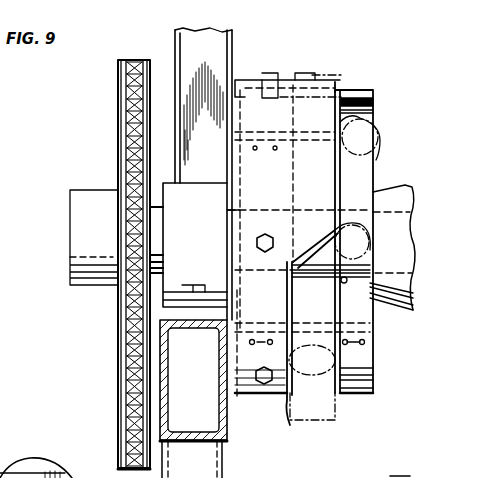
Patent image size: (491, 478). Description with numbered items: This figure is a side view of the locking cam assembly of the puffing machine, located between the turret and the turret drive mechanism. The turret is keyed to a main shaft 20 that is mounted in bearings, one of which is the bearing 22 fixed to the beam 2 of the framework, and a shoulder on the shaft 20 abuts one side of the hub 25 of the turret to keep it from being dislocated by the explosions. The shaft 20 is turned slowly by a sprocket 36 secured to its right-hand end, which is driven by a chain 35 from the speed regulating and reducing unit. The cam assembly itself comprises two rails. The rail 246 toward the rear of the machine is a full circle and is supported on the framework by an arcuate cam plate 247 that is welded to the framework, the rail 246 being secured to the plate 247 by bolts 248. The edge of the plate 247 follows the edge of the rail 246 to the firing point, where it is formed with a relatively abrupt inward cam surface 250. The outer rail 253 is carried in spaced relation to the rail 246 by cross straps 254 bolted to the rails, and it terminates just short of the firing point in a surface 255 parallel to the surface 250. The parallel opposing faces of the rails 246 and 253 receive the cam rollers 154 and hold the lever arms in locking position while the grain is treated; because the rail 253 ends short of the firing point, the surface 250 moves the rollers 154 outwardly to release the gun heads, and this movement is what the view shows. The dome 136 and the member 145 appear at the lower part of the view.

The beam 2 is at (227, 445).
The main shaft 20 is at (157, 222).
The bearing 22 is at (214, 190).
The hub 25 is at (405, 185).
The chain 35 is at (125, 97).
The sprocket 36 is at (120, 172).
The dome 136 is at (38, 458).
The base member 145 is at (397, 477).
The cam roller 154 is at (337, 72).
The rail 246 is at (251, 70).
The cam plate 247 is at (330, 92).
The bolt 248 is at (279, 75).
The inward cam surface 250 is at (302, 272).
The outer rail 253 is at (374, 376).
The cross strap 254 is at (318, 152).
The terminal surface 255 is at (345, 283).